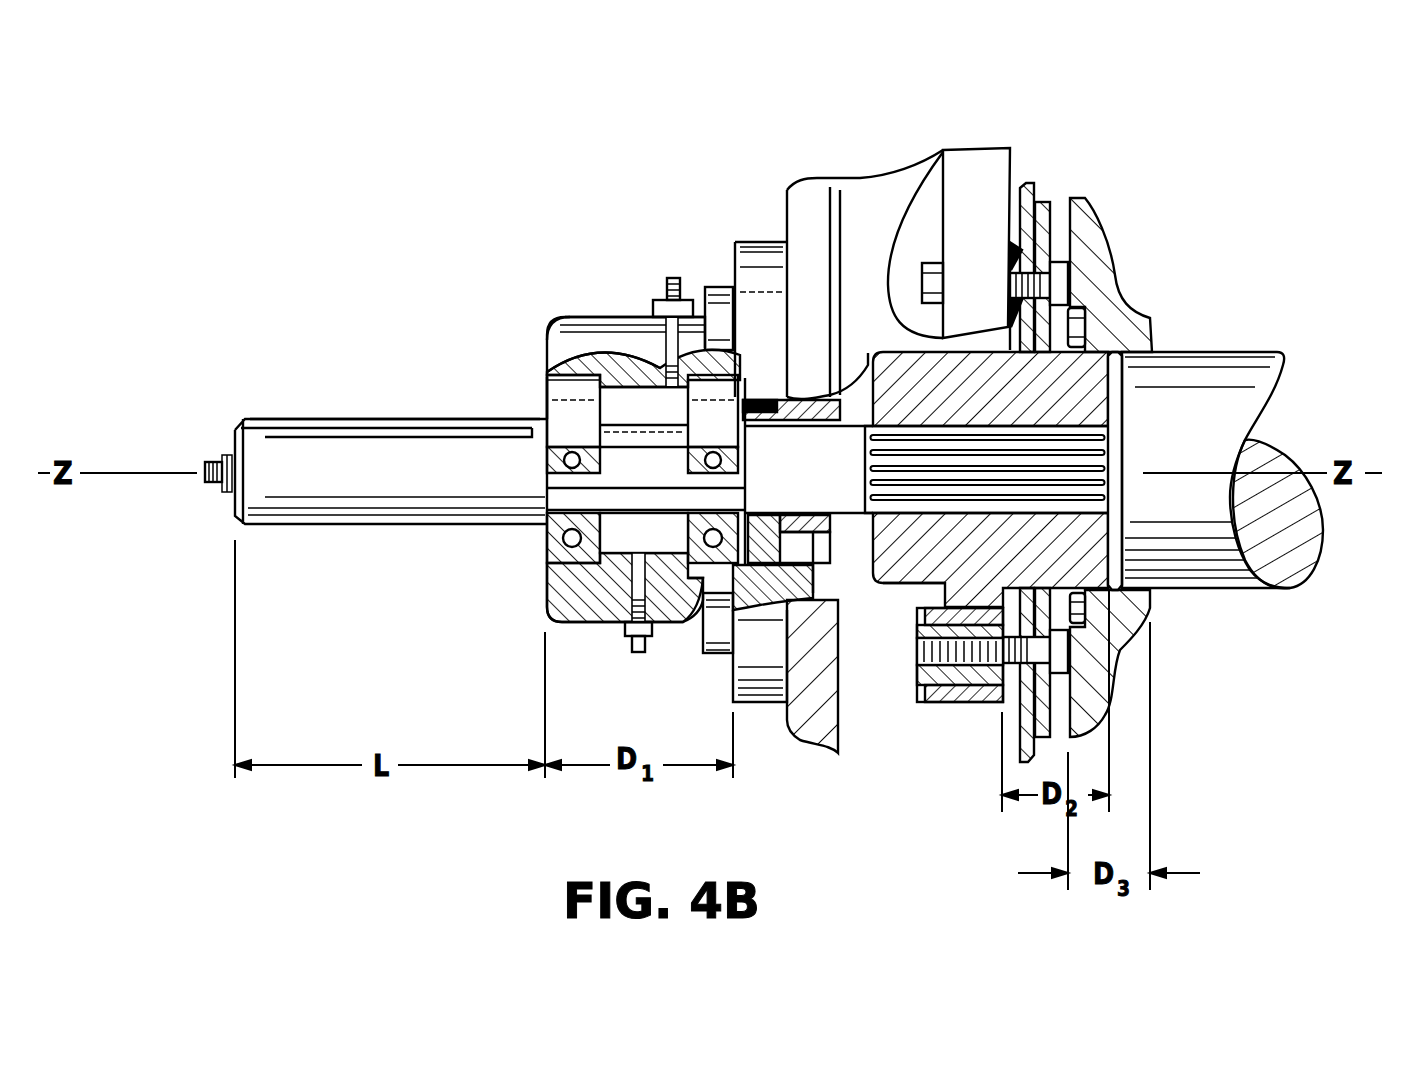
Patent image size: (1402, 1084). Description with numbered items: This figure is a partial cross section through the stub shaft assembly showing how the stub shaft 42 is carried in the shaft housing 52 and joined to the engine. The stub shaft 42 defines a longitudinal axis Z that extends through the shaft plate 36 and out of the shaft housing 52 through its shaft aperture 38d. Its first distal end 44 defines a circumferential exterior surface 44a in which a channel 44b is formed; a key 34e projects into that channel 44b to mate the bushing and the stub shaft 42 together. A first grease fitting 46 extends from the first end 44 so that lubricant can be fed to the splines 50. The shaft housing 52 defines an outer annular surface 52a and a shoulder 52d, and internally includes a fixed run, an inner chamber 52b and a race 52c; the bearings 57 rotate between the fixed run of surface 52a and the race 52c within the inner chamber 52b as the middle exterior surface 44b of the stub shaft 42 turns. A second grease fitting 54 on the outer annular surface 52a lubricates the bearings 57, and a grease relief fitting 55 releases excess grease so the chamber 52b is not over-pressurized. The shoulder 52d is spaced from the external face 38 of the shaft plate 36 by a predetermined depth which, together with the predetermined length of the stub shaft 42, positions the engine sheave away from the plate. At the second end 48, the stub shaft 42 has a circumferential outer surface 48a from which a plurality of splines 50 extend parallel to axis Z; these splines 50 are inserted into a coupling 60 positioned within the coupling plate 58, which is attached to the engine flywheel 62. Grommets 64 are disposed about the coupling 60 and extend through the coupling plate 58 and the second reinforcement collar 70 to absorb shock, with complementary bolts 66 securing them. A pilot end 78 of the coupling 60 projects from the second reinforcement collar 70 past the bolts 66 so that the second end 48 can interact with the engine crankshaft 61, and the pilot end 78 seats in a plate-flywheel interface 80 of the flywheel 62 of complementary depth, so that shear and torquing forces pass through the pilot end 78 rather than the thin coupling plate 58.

The key 34e is at (345, 420).
The shaft plate 36 is at (905, 232).
The external face 38 is at (787, 192).
The shaft aperture 38d is at (545, 405).
The stub shaft 42 is at (367, 395).
The first distal end 44 is at (233, 500).
The circumferential exterior surface 44a is at (303, 500).
The channel 44b is at (612, 447).
The first grease fitting 46 is at (212, 470).
The second end 48 is at (1120, 457).
The circumferential outer surface 48a is at (893, 425).
The splines 50 is at (1010, 425).
The shaft housing 52 is at (632, 212).
The outer annular surface 52a is at (622, 317).
The inner chamber 52b is at (668, 552).
The race 52c is at (548, 542).
The shoulder 52d is at (545, 350).
The second grease fitting 54 is at (668, 298).
The grease relief fitting 55 is at (620, 632).
The bearings 57 is at (548, 560).
The coupling plate 58 is at (1028, 182).
The coupling 60 is at (878, 597).
The engine crankshaft 61 is at (1200, 360).
The engine flywheel 62 is at (1095, 235).
The grommets 64 is at (930, 702).
The complementary bolts 66 is at (1110, 663).
The second reinforcement collar 70 is at (1052, 202).
The pilot end 78 is at (1110, 325).
The plate-flywheel interface 80 is at (1150, 602).